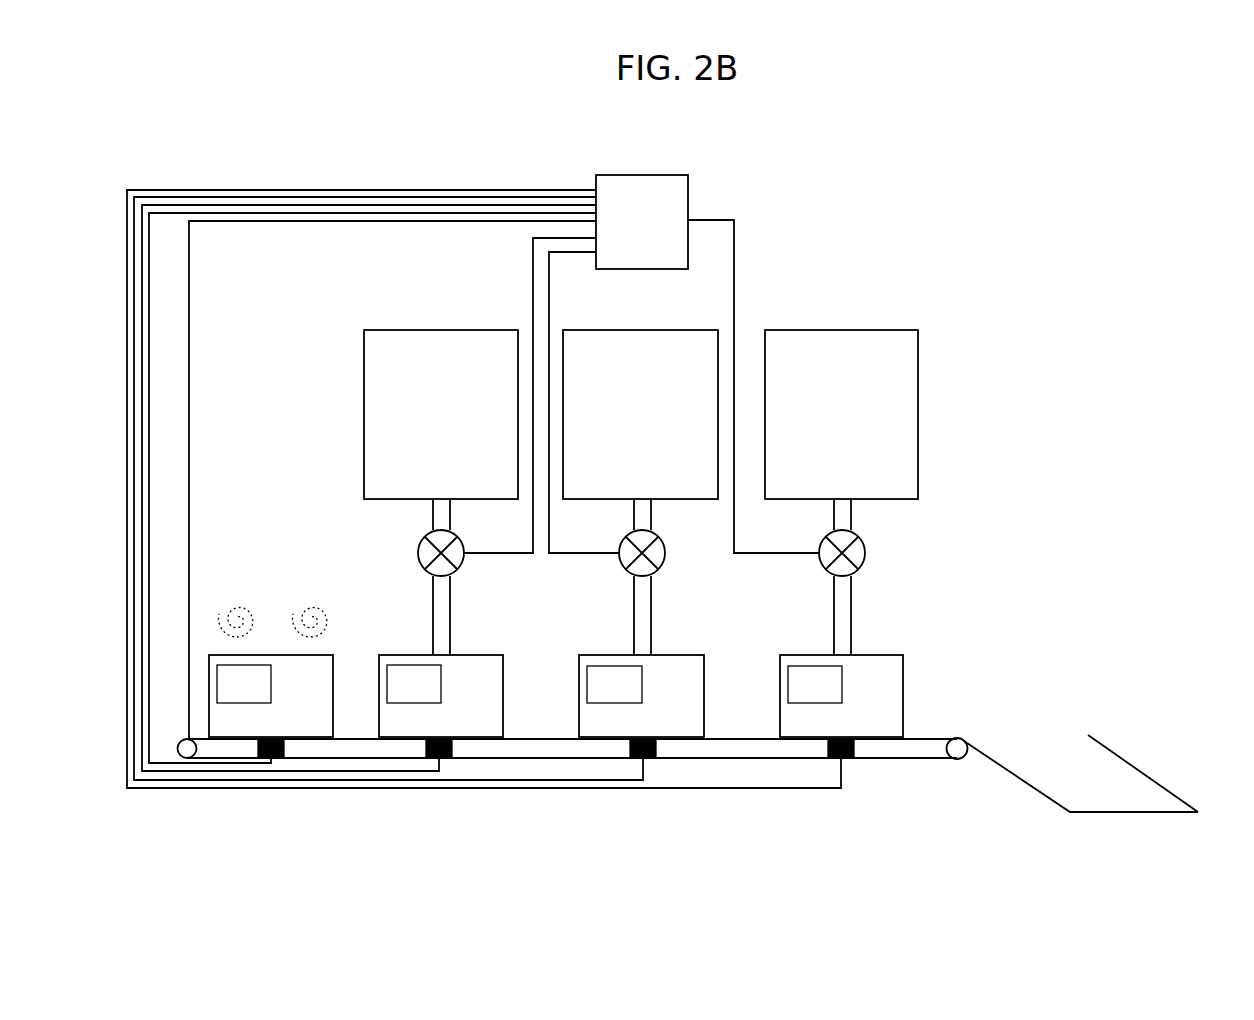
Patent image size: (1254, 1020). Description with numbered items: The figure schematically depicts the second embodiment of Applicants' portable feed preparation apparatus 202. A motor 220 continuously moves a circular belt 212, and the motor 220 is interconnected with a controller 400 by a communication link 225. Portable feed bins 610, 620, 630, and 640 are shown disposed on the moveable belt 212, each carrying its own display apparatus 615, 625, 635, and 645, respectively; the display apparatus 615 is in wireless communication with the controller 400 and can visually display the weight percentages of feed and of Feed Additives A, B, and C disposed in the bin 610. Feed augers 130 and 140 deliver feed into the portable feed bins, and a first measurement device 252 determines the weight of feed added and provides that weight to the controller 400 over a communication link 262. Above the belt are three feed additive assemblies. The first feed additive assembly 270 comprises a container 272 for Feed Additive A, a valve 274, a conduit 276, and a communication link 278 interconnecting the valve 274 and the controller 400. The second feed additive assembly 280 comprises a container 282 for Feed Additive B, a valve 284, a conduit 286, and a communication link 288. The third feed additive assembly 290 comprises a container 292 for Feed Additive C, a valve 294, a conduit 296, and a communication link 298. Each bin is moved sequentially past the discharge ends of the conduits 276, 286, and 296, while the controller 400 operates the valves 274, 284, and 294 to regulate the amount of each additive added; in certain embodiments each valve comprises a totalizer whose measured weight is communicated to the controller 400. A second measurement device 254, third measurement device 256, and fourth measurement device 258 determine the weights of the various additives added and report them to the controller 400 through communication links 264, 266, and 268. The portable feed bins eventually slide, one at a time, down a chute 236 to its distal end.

The portable feed preparation apparatus 202 is at (924, 141).
The controller 400 is at (642, 222).
The communication link 268 is at (127, 269).
The communication link 266 is at (134, 330).
The communication link 264 is at (142, 391).
The communication link 262 is at (149, 452).
The communication link 225 is at (190, 513).
The feed additive assembly 270 is at (437, 326).
The container 272 is at (441, 414).
The valve 274 is at (418, 553).
The conduit 276 is at (449, 632).
The communication link 278 is at (503, 556).
The feed additive assembly 280 is at (722, 252).
The container 282 is at (640, 414).
The valve 284 is at (665, 550).
The conduit 286 is at (651, 609).
The communication link 288 is at (582, 556).
The feed additive assembly 290 is at (839, 327).
The container 292 is at (841, 414).
The valve 294 is at (865, 553).
The conduit 296 is at (851, 612).
The communication link 298 is at (771, 557).
The feed auger 130 is at (237, 616).
The feed auger 140 is at (312, 614).
The portable feed bin 640 is at (271, 696).
The display apparatus 645 is at (244, 684).
The portable feed bin 630 is at (441, 696).
The display apparatus 635 is at (414, 684).
The portable feed bin 620 is at (641, 696).
The display apparatus 625 is at (614, 684).
The portable feed bin 610 is at (841, 696).
The display apparatus 615 is at (815, 684).
The circular belt 212 is at (545, 740).
The motor 220 is at (183, 757).
The first measurement device 252 is at (258, 757).
The second measurement device 254 is at (437, 757).
The third measurement device 256 is at (643, 758).
The fourth measurement device 258 is at (841, 758).
The chute 236 is at (1163, 800).